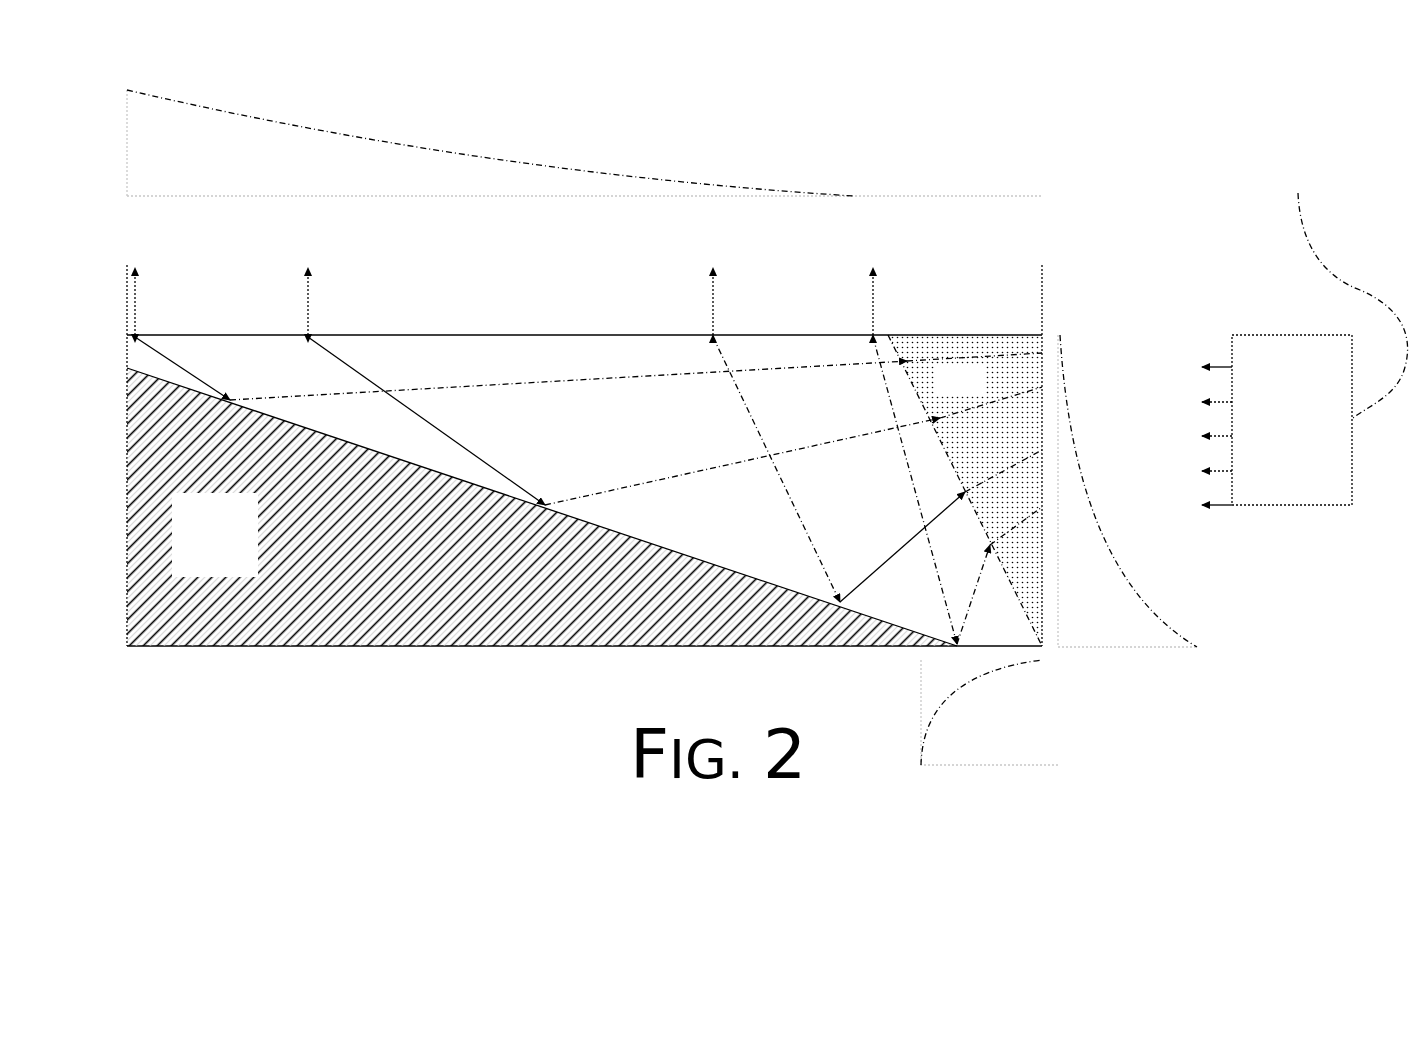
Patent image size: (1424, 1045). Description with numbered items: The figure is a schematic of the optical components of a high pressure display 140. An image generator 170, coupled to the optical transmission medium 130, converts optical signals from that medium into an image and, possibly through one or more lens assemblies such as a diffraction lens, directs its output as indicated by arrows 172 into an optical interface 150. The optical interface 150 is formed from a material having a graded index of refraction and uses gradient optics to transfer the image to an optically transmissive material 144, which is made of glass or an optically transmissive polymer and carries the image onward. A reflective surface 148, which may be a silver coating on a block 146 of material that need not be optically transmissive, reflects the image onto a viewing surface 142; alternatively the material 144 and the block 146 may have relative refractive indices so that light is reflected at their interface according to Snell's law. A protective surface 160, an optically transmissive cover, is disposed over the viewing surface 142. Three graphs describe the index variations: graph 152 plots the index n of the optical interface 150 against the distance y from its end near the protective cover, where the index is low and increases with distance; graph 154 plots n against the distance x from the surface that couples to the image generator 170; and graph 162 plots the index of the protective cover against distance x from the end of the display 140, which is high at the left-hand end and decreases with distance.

The optical transmission medium 130 is at (1298, 232).
The display 140 is at (230, 710).
The viewing surface 142 is at (541, 336).
The optically transmissive material 144 is at (588, 490).
The block 146 is at (542, 507).
The reflective surface 148 is at (747, 574).
The optical interface 150 is at (965, 490).
The graph 152 is at (1186, 682).
The graph 154 is at (1066, 792).
The protective surface 160 is at (504, 305).
The graph 162 is at (172, 82).
The image generator 170 is at (1292, 420).
The arrows 172 is at (1196, 342).